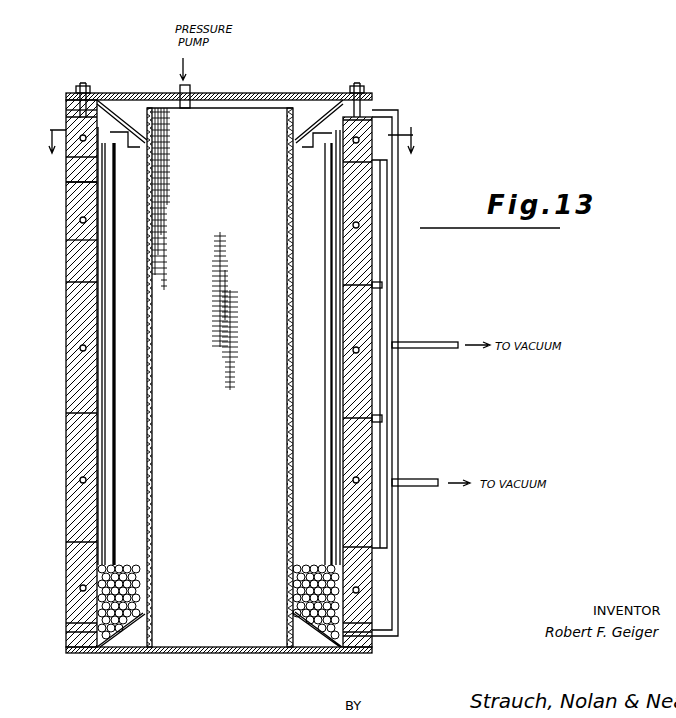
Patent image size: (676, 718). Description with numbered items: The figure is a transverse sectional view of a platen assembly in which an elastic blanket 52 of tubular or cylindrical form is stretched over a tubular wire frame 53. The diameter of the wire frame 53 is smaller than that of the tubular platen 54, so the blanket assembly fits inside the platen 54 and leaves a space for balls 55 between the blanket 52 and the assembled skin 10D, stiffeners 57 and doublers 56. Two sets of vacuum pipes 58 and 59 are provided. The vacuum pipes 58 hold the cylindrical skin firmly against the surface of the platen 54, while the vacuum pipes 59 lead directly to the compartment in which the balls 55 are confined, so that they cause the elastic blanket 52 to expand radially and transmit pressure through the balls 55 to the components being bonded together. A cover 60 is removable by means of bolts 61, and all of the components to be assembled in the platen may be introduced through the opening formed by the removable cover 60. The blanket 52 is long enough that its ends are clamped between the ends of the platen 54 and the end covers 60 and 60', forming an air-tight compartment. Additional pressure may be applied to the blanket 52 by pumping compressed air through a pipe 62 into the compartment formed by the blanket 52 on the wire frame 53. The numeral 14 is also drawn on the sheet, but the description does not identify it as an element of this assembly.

The skin 10D is at (78, 180).
The section line 14 is at (229, 138).
The elastic blanket 52 is at (126, 115).
The wire frame 53 is at (152, 224).
The platen 54 is at (72, 444).
The balls 55 is at (318, 632).
The doublers 56 is at (70, 238).
The stiffeners 57 is at (330, 180).
The vacuum pipes 58 is at (70, 158).
The vacuum pipes 59 is at (68, 108).
The cover 60 is at (219, 82).
The end cover 60' is at (219, 671).
The bolts 61 is at (83, 85).
The pipe 62 is at (191, 90).